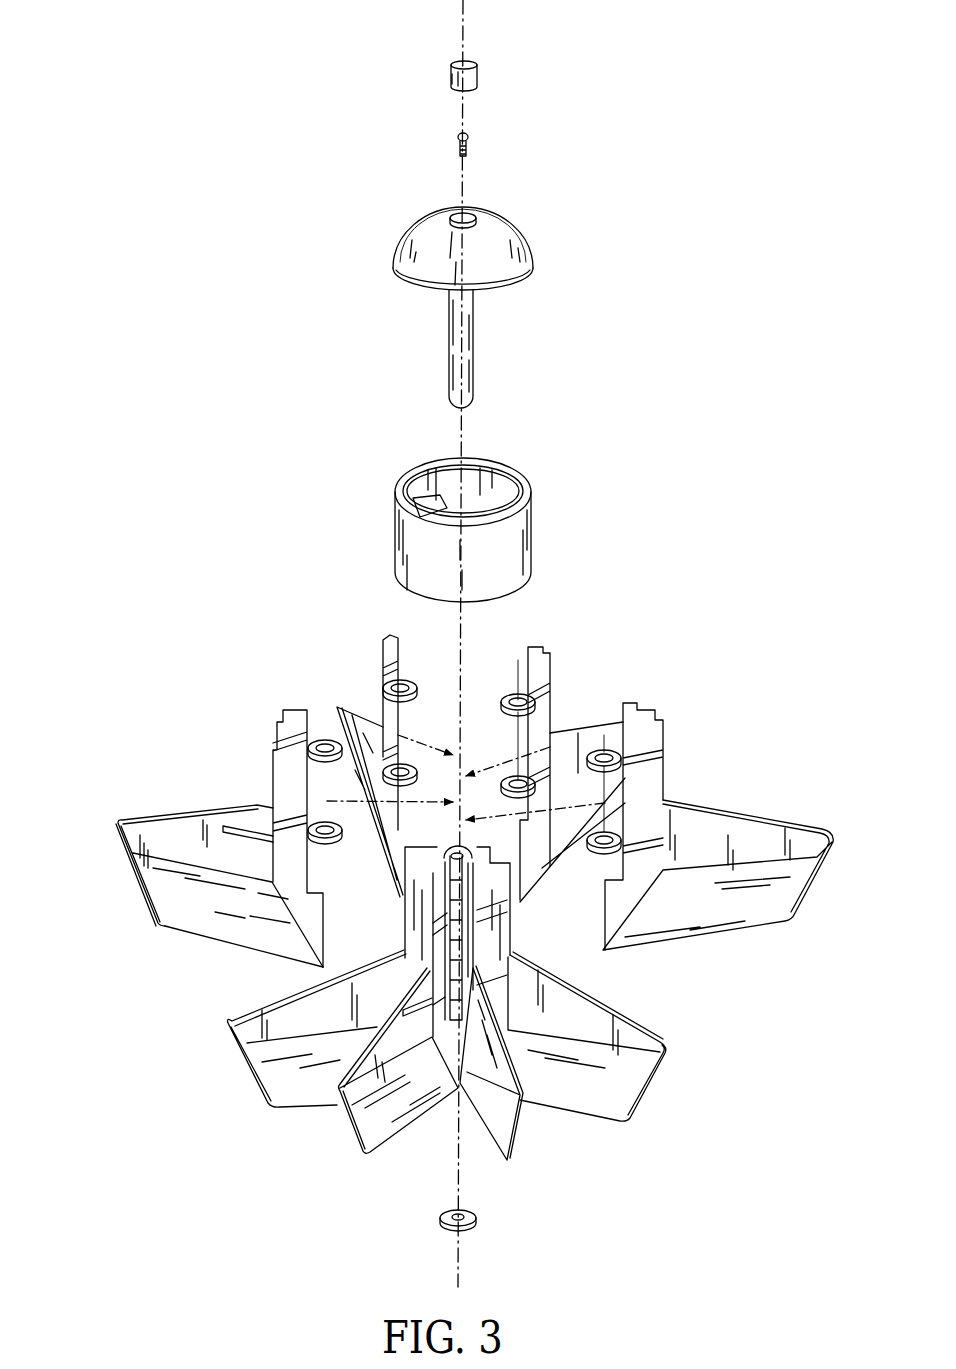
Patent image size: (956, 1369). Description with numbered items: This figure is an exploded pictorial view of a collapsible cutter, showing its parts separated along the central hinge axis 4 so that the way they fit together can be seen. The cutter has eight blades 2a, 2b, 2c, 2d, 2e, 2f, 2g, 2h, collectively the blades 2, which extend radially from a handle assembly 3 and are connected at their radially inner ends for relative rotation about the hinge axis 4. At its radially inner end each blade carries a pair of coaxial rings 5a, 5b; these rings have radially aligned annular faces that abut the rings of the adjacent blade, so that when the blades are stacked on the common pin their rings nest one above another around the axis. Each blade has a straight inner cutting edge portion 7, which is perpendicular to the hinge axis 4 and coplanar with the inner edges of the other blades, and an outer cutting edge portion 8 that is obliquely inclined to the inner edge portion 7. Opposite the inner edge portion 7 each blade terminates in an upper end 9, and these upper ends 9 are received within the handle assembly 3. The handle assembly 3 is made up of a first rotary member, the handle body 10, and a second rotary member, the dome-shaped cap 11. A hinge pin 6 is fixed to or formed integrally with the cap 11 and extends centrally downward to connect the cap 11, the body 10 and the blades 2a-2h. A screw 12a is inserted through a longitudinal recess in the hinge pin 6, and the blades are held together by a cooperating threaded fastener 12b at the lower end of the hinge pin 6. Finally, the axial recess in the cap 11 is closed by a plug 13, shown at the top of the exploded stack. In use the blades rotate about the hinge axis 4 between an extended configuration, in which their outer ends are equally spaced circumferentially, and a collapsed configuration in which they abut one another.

The blades 2 is at (178, 913).
The blade 2a is at (365, 1133).
The blade 2b is at (508, 1135).
The blade 2c is at (625, 1100).
The blade 2d is at (760, 918).
The blade 2e is at (547, 875).
The blade 2f is at (402, 836).
The blade 2g is at (172, 825).
The blade 2h is at (272, 1075).
The handle assembly 3 is at (190, 278).
The hinge axis 4 is at (456, 1268).
The ring 5a is at (324, 740).
The ring 5b is at (326, 840).
The hinge pin 6 is at (449, 348).
The inner cutting edge portion 7 is at (225, 947).
The outer cutting edge portion 8 is at (123, 868).
The upper end 9 is at (277, 705).
The handle body 10 is at (366, 535).
The cap 11 is at (368, 233).
The screw 12a is at (470, 142).
The threaded fastener 12b is at (477, 1218).
The plug 13 is at (478, 74).